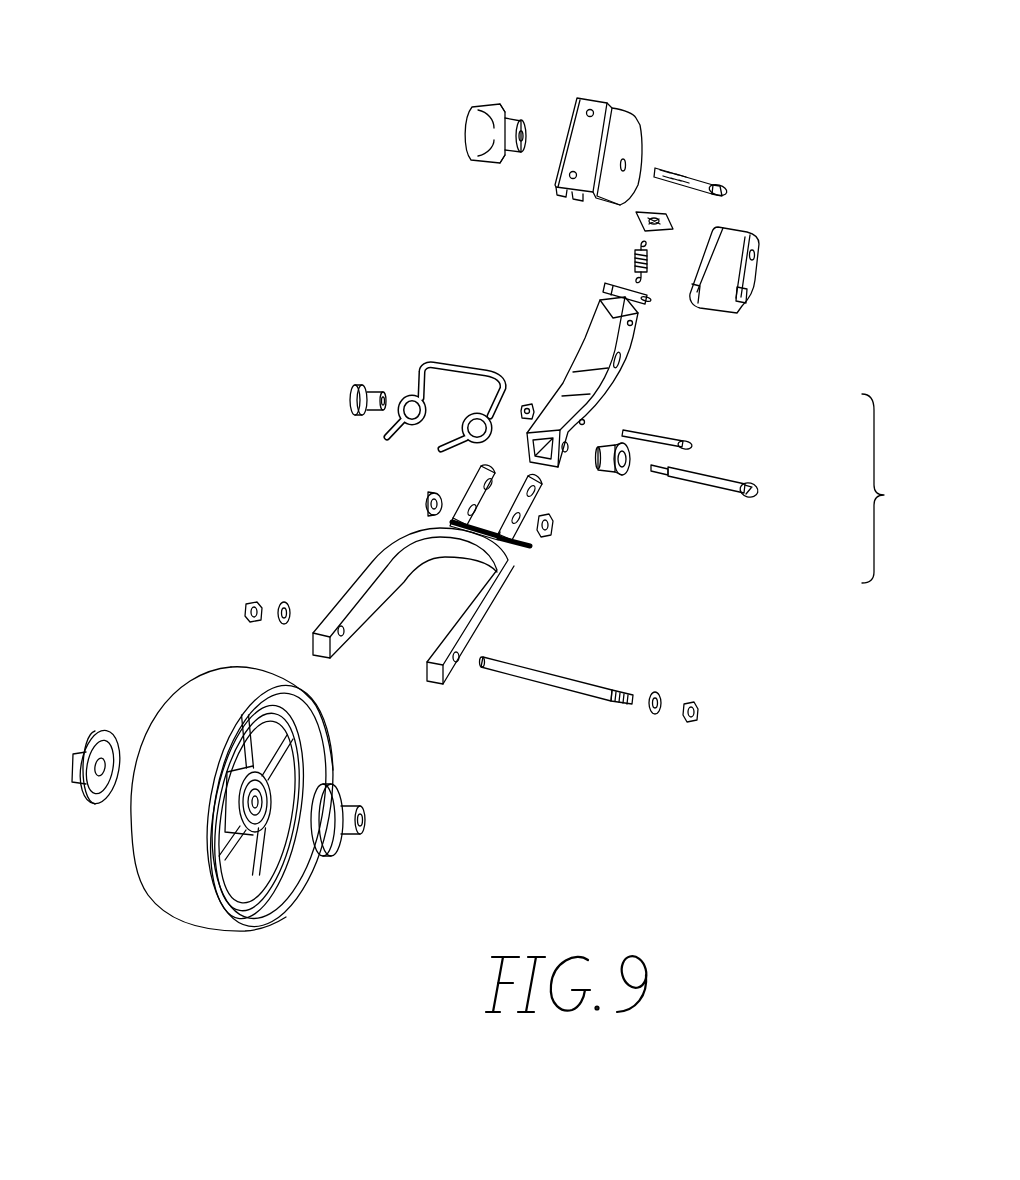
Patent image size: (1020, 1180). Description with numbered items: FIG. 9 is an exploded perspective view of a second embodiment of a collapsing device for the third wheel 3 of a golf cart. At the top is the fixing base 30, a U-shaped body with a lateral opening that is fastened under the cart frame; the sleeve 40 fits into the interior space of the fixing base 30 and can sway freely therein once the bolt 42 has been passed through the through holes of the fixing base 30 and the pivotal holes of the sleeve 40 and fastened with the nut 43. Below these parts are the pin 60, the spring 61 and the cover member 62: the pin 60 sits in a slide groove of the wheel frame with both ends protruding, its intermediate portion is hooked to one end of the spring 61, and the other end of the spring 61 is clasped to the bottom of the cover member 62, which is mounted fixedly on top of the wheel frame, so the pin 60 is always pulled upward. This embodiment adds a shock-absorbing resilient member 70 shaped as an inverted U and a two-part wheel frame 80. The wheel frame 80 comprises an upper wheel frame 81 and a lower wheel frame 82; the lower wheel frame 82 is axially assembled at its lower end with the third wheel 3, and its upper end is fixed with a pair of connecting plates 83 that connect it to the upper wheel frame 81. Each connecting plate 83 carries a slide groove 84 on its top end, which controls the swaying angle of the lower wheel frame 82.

The third wheel 3 is at (270, 897).
The fixing base 30 is at (593, 134).
The sleeve 40 is at (728, 268).
The bolt 42 is at (707, 178).
The nut 43 is at (471, 130).
The pin 60 is at (605, 290).
The spring 61 is at (632, 262).
The cover member 62 is at (670, 222).
The shock-absorbing resilient member 70 is at (435, 365).
The wheel frame 80 is at (897, 488).
The upper wheel frame 81 is at (605, 389).
The lower wheel frame 82 is at (503, 578).
The connecting plates 83 is at (473, 490).
The slide groove 84 is at (540, 494).